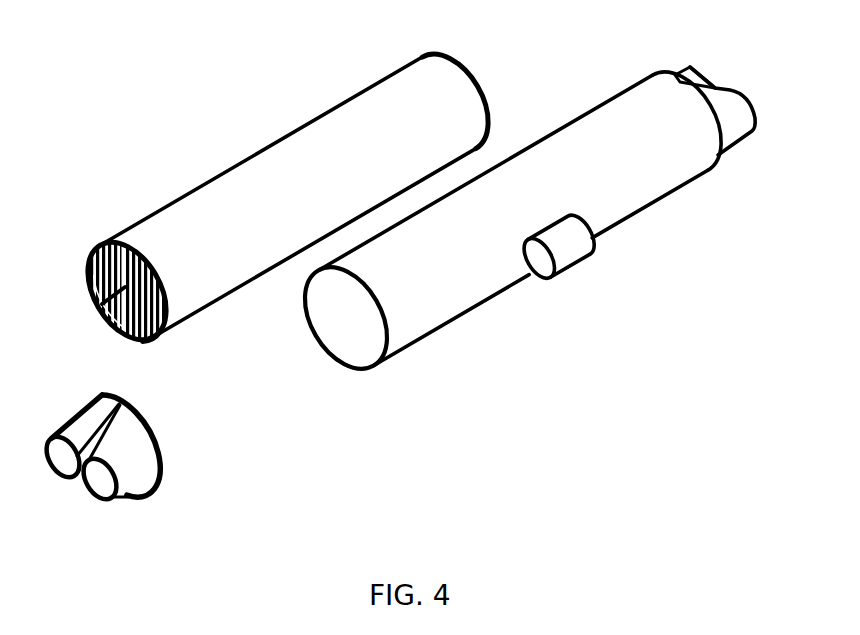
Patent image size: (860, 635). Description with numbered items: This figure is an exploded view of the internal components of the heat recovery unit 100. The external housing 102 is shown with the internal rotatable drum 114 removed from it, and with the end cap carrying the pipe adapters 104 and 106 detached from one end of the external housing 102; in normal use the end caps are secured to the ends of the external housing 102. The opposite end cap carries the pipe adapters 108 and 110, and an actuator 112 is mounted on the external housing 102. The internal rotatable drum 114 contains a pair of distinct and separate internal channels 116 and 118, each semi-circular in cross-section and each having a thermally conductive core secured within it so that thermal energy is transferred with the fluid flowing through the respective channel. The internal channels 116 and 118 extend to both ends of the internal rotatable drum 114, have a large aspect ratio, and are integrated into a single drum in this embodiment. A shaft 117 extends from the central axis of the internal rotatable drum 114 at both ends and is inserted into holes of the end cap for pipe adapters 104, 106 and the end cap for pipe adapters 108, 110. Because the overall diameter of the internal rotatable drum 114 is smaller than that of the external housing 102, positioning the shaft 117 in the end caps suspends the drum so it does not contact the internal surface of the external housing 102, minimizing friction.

The heat recovery unit 100 is at (243, 60).
The external housing 102 is at (543, 156).
The pipe adapter 104 is at (73, 432).
The pipe adapter 106 is at (128, 483).
The pipe adapter 108 is at (695, 72).
The pipe adapter 110 is at (752, 122).
The actuator 112 is at (573, 250).
The internal rotatable drum 114 is at (227, 197).
The internal channel 116 is at (88, 268).
The shaft 117 is at (100, 310).
The internal channel 118 is at (160, 332).